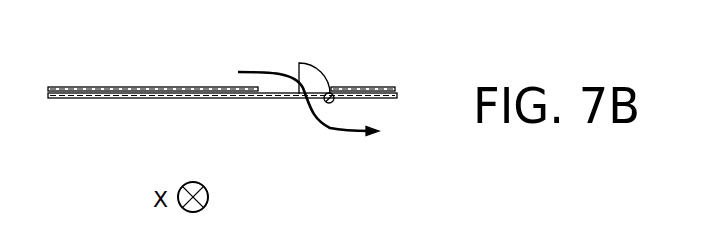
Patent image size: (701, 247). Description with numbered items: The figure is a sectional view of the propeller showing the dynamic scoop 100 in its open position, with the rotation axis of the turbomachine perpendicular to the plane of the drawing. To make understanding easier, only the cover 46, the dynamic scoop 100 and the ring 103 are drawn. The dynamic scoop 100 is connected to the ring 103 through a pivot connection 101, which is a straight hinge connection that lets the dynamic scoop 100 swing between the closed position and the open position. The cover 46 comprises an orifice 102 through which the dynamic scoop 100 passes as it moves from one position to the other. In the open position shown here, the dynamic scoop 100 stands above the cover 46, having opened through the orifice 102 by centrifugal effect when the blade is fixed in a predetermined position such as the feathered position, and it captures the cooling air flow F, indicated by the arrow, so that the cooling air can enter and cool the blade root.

The cover 46 is at (102, 87).
The ring 103 is at (138, 100).
The dynamic scoop 100 is at (312, 80).
The pivot connection 101 is at (330, 93).
The orifice 102 is at (273, 88).
The cooling air flow F is at (328, 130).